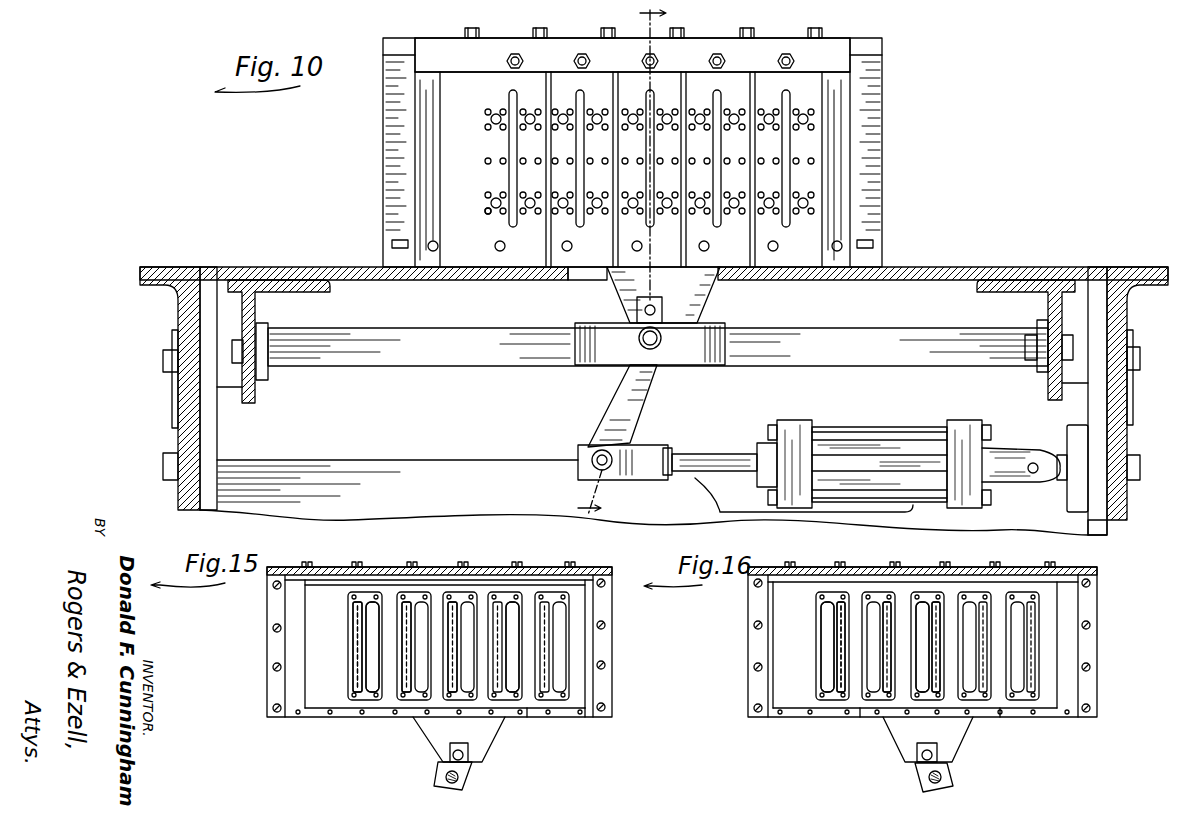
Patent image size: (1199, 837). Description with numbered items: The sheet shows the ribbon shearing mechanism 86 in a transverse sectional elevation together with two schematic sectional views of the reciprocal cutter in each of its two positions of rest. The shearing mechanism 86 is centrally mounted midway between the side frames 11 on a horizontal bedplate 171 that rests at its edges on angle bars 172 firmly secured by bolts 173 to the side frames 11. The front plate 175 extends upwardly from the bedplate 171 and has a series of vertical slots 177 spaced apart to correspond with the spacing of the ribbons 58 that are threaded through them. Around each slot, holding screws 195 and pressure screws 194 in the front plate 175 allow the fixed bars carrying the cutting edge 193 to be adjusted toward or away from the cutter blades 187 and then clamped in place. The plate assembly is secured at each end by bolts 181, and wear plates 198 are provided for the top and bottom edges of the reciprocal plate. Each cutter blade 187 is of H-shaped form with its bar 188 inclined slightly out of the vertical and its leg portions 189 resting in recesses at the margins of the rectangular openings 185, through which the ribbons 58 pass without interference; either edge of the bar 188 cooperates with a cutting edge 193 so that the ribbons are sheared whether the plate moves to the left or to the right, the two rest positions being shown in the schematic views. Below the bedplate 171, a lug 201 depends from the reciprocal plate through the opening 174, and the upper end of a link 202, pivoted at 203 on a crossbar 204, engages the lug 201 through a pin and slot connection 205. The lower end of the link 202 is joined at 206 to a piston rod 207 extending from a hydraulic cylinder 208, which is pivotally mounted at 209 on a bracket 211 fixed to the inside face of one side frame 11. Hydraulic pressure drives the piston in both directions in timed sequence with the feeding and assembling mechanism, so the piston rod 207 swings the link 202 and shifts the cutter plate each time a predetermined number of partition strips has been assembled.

In FIG. 10, the side frames 11 is at (1150, 266).
In FIG. 10, the ribbon shearing mechanism 86 is at (897, 68).
In FIG. 10, the front plate 175 is at (440, 76).
In FIG. 10, the vertical slots 177 is at (509, 176).
In FIG. 10, the holding screws 195 is at (496, 115).
In FIG. 10, the pressure screws 194 is at (485, 213).
In FIG. 10, the bedplate 171 is at (282, 267).
In FIG. 10, the opening 174 is at (580, 280).
In FIG. 10, the angle bars 172 is at (258, 300).
In FIG. 10, the bolts 173 is at (162, 358).
In FIG. 10, the crossbar 204 is at (900, 328).
In FIG. 10, the lug 201 is at (705, 290).
In FIG. 15, the lug 201 is at (483, 731).
In FIG. 16, the lug 201 is at (964, 731).
In FIG. 10, the pin and slot connection 205 is at (637, 310).
In FIG. 15, the pin and slot connection 205 is at (458, 746).
In FIG. 16, the pin and slot connection 205 is at (927, 746).
In FIG. 10, the pivot 203 is at (655, 345).
In FIG. 15, the pivot 203 is at (460, 781).
In FIG. 16, the pivot 203 is at (942, 780).
In FIG. 10, the link 202 is at (600, 410).
In FIG. 15, the link 202 is at (466, 772).
In FIG. 16, the link 202 is at (948, 773).
In FIG. 10, the connection 206 is at (592, 456).
In FIG. 10, the piston rod 207 is at (700, 478).
In FIG. 10, the hydraulic cylinder 208 is at (890, 442).
In FIG. 10, the pivotal mounting 209 is at (1030, 478).
In FIG. 10, the bracket 211 is at (1100, 530).
In FIG. 15, the wear plates 198 is at (330, 578).
In FIG. 16, the wear plates 198 is at (810, 580).
In FIG. 15, the bolts 181 is at (272, 665).
In FIG. 16, the bolts 181 is at (922, 645).
In FIG. 15, the leg portions 189 is at (362, 600).
In FIG. 16, the leg portions 189 is at (840, 597).
In FIG. 15, the ribbons 58 is at (540, 625).
In FIG. 16, the ribbons 58 is at (945, 595).
In FIG. 15, the rectangular openings 185 is at (424, 610).
In FIG. 16, the rectangular openings 185 is at (874, 608).
In FIG. 15, the bar 188 is at (424, 630).
In FIG. 16, the bar 188 is at (880, 625).
In FIG. 15, the cutter blades 187 is at (408, 661).
In FIG. 16, the cutter blades 187 is at (870, 661).
In FIG. 15, the cutting edge 193 is at (356, 662).
In FIG. 16, the cutting edge 193 is at (830, 687).